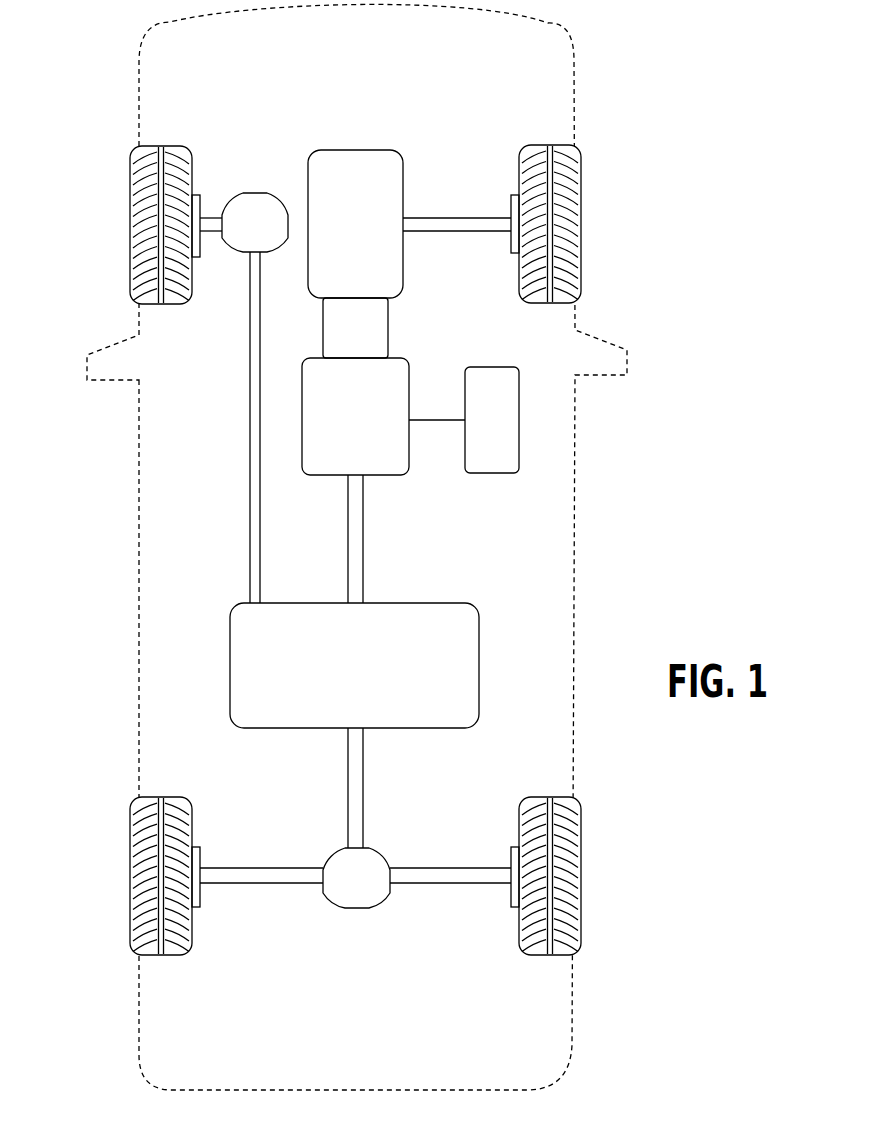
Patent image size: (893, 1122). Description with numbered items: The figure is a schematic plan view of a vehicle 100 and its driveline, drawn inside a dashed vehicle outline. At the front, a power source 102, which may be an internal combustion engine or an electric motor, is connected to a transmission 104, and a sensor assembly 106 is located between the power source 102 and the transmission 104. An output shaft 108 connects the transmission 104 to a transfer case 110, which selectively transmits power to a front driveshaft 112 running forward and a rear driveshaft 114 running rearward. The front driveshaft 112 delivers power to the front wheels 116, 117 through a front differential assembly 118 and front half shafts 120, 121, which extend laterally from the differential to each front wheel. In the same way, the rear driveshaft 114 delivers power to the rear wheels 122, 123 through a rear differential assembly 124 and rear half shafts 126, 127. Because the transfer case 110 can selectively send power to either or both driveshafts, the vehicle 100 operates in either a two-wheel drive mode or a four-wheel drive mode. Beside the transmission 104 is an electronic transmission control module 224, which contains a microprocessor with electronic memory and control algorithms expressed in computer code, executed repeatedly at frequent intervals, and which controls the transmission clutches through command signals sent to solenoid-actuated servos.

The vehicle 100 is at (137, 110).
The power source 102 is at (375, 204).
The transmission 104 is at (375, 429).
The sensor assembly 106 is at (375, 339).
The output shaft 108 is at (363, 557).
The transfer case 110 is at (375, 675).
The front driveshaft 112 is at (248, 463).
The rear driveshaft 114 is at (364, 788).
The front wheel 116 is at (130, 190).
The front wheel 117 is at (582, 192).
The front differential assembly 118 is at (257, 193).
The front half shaft 120 is at (213, 214).
The front half shaft 121 is at (450, 217).
The rear wheel 122 is at (130, 848).
The rear wheel 123 is at (582, 848).
The rear differential assembly 124 is at (355, 909).
The rear half shaft 126 is at (273, 884).
The rear half shaft 127 is at (443, 884).
The electronic transmission control module 224 is at (510, 429).